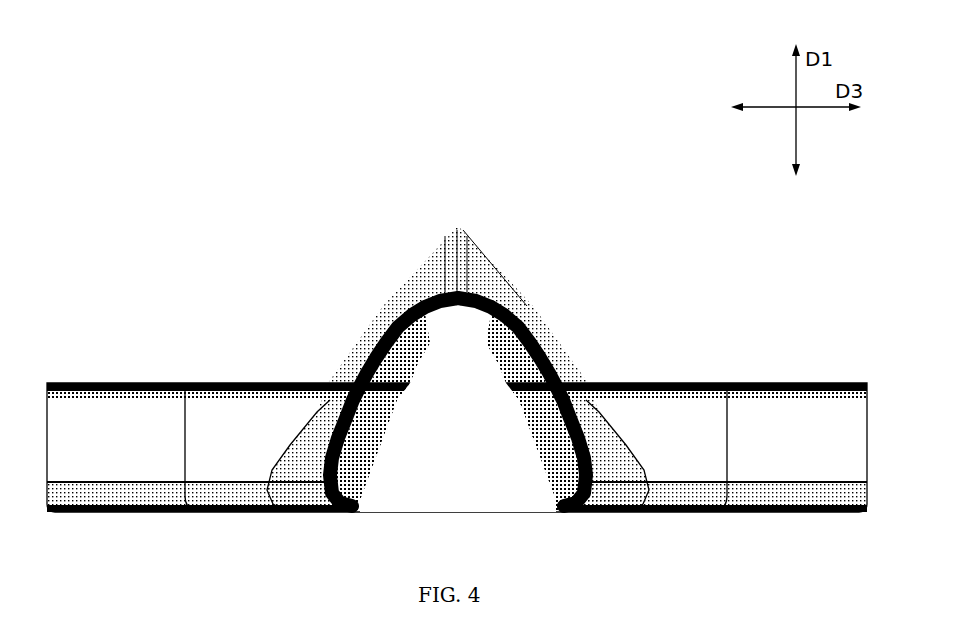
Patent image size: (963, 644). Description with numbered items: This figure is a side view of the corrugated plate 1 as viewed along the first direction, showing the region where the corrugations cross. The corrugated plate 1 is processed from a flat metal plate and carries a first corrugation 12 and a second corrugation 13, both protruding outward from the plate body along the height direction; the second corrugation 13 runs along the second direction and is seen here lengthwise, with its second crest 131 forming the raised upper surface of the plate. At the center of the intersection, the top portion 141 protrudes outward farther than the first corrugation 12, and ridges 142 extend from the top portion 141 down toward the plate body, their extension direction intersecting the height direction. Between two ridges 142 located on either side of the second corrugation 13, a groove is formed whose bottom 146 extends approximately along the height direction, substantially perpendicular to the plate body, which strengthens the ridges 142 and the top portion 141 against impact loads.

The corrugated plate 1 is at (447, 312).
The first corrugation 12 is at (560, 356).
The second corrugation 13 is at (447, 401).
The second crest 131 is at (222, 382).
The top portion 141 is at (458, 228).
The ridge 142 is at (403, 293).
The bottom of the groove portion 146 is at (428, 347).